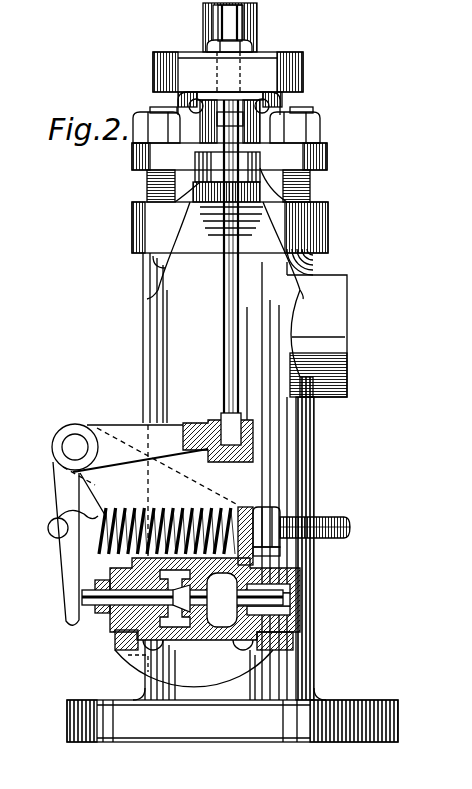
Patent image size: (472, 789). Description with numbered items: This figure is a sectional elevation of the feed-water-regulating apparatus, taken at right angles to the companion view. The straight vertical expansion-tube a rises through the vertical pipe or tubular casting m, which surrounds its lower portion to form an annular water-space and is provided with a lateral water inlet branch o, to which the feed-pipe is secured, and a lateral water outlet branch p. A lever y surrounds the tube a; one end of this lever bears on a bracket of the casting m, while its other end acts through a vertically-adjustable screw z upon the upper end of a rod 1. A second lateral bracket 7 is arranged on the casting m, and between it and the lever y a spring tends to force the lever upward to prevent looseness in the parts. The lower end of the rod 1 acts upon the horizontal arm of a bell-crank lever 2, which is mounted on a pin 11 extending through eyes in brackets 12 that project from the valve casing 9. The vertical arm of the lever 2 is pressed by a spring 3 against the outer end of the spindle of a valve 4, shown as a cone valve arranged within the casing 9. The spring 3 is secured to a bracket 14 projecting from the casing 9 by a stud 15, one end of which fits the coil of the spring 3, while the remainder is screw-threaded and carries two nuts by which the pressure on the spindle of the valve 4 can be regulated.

The expansion-tube a is at (257, 12).
The vertically-adjustable screw z is at (217, 30).
The lever y is at (202, 68).
The second lateral bracket 7 is at (227, 167).
The rod 1 is at (219, 271).
The water outlet branch p is at (317, 323).
The pin 11 is at (76, 440).
The bell-crank lever 2 is at (66, 510).
The brackets 12 is at (128, 457).
The spring 3 is at (192, 508).
The bracket 14 is at (244, 507).
The stud 15 is at (327, 540).
The vertical pipe or tubular casting m is at (287, 470).
The valve 4 is at (180, 640).
The casing 9 is at (214, 640).
The water inlet branch o is at (122, 653).